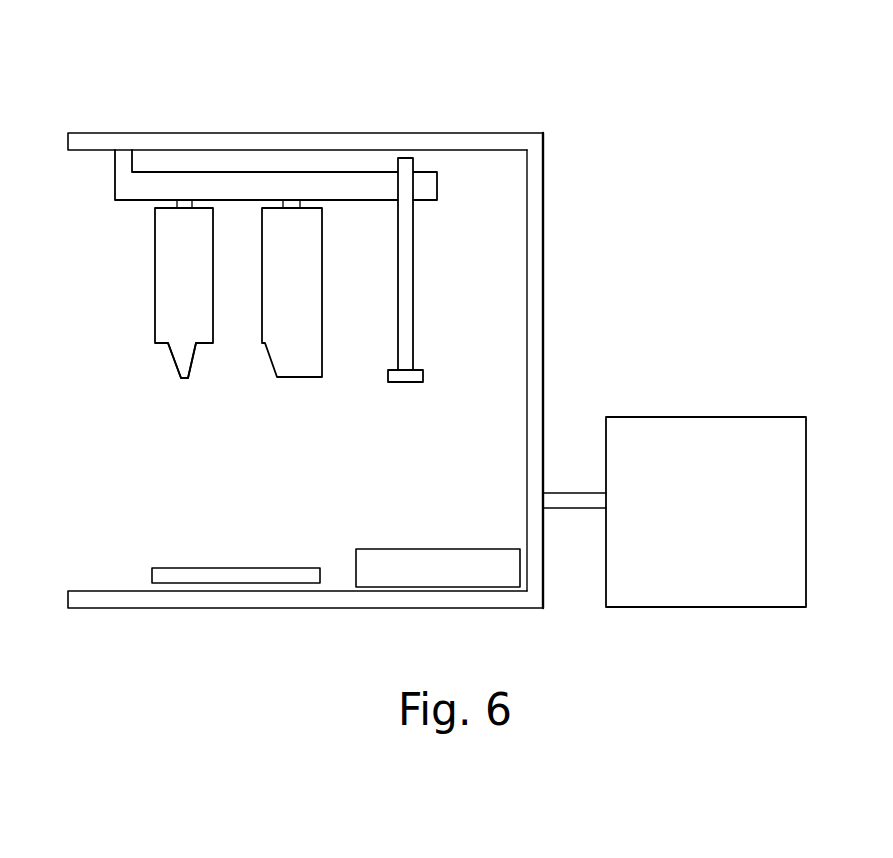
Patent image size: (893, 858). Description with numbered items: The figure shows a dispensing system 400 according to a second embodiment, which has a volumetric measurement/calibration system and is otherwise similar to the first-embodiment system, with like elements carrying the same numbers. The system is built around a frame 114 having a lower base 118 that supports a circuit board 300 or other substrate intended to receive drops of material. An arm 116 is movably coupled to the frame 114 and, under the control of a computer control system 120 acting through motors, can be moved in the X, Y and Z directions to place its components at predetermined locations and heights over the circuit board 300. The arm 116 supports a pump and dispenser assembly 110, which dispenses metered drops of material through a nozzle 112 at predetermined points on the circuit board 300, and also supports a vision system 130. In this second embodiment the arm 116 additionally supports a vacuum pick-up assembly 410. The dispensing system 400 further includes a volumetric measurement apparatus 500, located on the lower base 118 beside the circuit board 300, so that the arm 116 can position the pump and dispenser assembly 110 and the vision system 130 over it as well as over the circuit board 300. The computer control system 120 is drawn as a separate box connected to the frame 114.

The dispensing system 400 is at (533, 101).
The frame 114 is at (543, 221).
The arm 116 is at (112, 168).
The lower base 118 is at (223, 602).
The pump and dispenser assembly 110 is at (173, 258).
The nozzle 112 is at (172, 368).
The vision system 130 is at (305, 264).
The vacuum pick-up assembly 410 is at (413, 247).
The circuit board 300 is at (248, 570).
The volumetric measurement apparatus 500 is at (453, 567).
The computer control system 120 is at (697, 437).